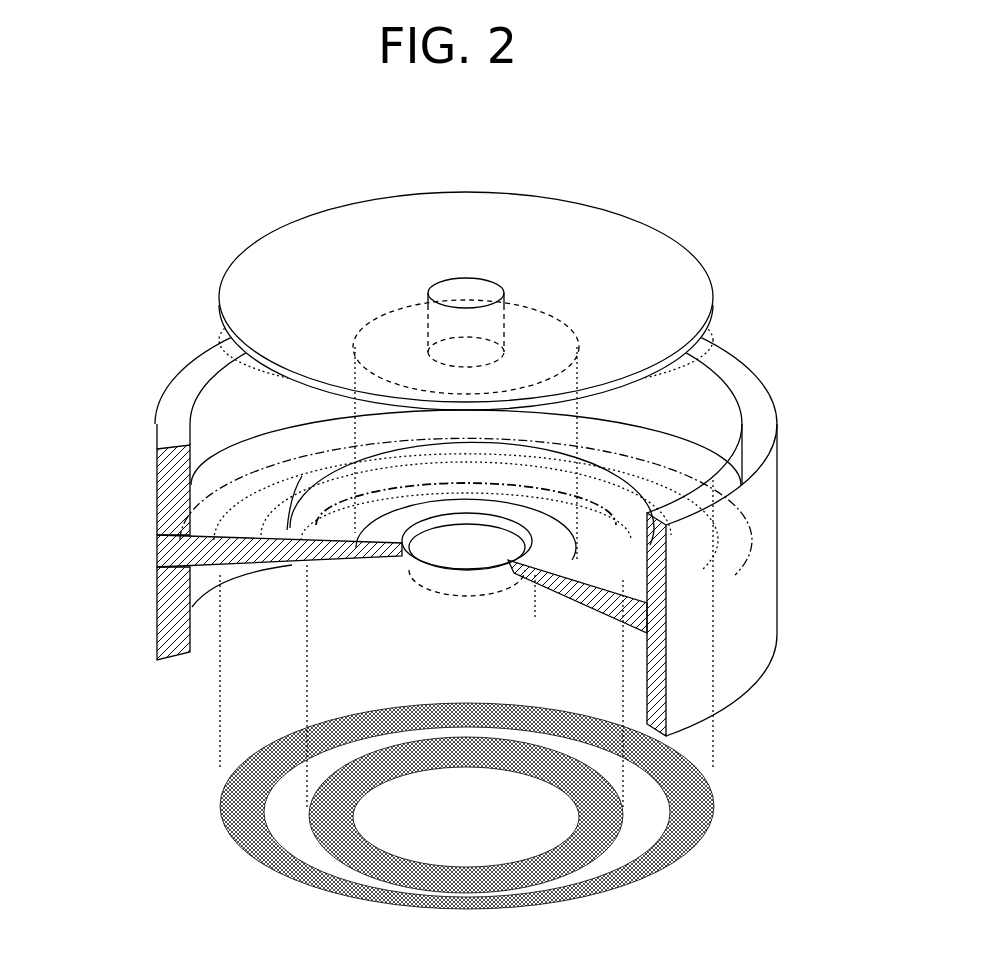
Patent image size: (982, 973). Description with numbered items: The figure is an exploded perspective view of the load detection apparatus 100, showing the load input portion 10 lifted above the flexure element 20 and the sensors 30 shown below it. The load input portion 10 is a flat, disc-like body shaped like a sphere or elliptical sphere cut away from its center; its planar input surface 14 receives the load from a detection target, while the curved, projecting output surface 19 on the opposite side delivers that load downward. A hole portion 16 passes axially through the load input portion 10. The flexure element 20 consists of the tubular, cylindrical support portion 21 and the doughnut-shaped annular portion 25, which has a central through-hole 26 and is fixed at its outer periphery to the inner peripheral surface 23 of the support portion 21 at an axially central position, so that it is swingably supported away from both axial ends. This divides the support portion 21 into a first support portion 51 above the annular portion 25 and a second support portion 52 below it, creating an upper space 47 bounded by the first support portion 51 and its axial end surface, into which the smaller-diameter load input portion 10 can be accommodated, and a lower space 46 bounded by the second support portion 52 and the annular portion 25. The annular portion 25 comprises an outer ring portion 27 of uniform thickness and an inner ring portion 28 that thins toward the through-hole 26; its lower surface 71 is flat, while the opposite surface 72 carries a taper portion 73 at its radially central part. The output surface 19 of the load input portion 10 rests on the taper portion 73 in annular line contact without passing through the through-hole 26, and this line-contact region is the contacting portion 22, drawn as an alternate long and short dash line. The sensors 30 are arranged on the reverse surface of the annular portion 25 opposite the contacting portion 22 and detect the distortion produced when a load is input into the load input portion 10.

The motor assembly 100 is at (773, 272).
The load input portion 10 is at (265, 222).
The input surface 14 is at (325, 293).
The hole portion 16 is at (505, 322).
The output surface 19 is at (275, 385).
The flexure element 20 is at (451, 600).
The support portion 21 is at (662, 700).
The annular portion 25 is at (188, 551).
The contacting portion 22 is at (437, 478).
The inner peripheral surface 23 is at (212, 582).
The through-hole 26 is at (466, 547).
The outer ring portion 27 is at (623, 620).
The inner ring portion 28 is at (533, 580).
The sensors 30 is at (400, 708).
The space 46 is at (384, 621).
The space 47 is at (639, 417).
The first support portion 51 is at (158, 487).
The second support portion 52 is at (158, 600).
The surface 71 is at (284, 568).
The surface 72 is at (690, 462).
The taper portion 73 is at (305, 468).